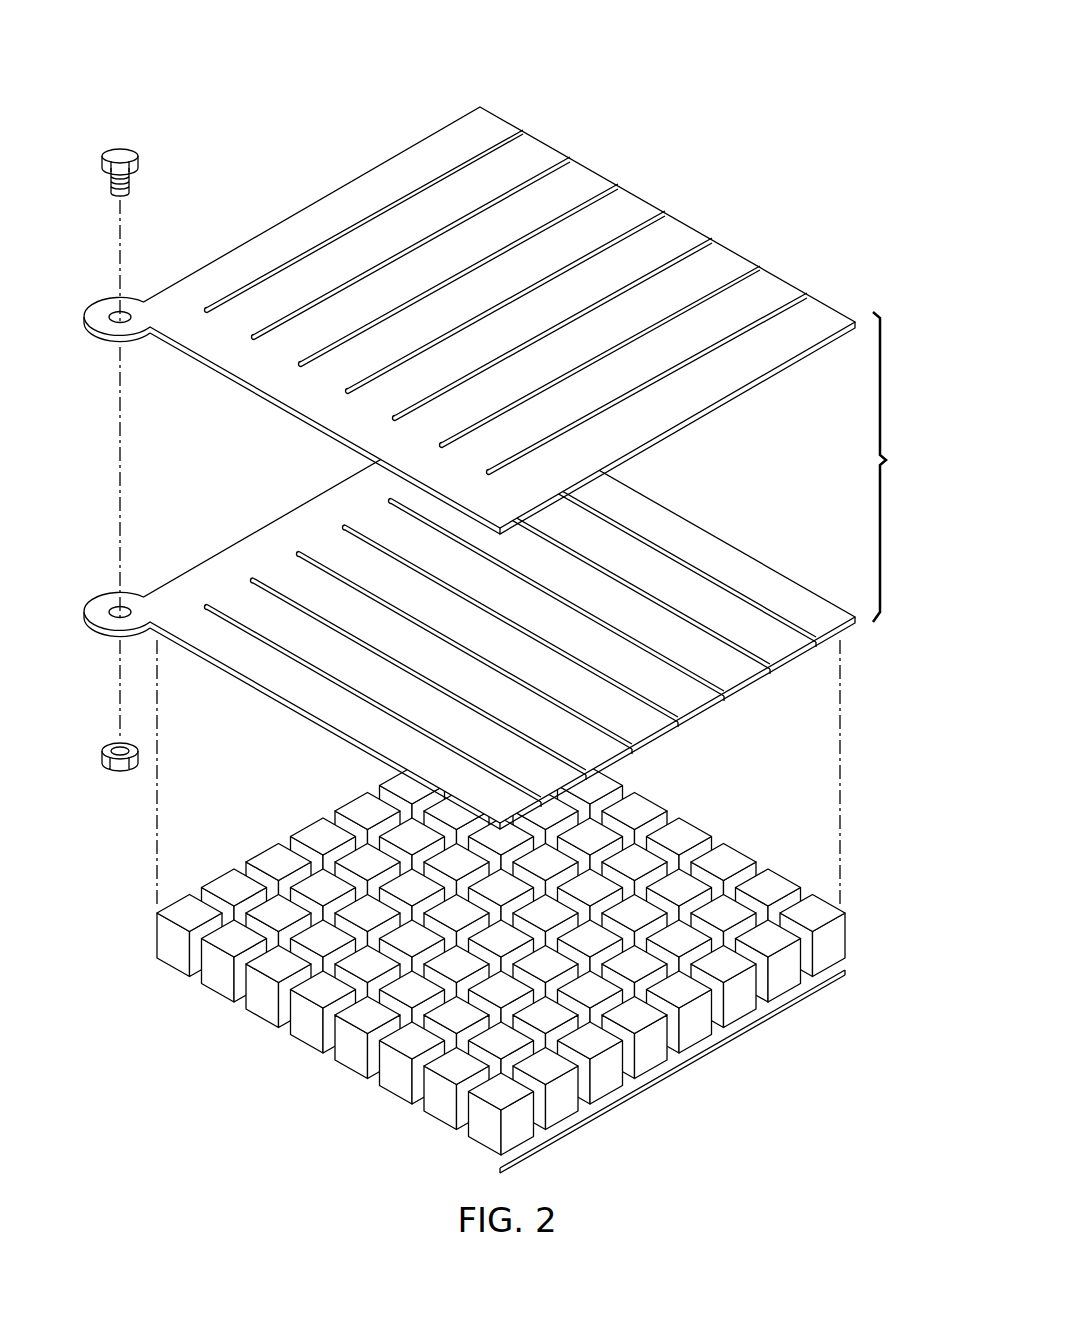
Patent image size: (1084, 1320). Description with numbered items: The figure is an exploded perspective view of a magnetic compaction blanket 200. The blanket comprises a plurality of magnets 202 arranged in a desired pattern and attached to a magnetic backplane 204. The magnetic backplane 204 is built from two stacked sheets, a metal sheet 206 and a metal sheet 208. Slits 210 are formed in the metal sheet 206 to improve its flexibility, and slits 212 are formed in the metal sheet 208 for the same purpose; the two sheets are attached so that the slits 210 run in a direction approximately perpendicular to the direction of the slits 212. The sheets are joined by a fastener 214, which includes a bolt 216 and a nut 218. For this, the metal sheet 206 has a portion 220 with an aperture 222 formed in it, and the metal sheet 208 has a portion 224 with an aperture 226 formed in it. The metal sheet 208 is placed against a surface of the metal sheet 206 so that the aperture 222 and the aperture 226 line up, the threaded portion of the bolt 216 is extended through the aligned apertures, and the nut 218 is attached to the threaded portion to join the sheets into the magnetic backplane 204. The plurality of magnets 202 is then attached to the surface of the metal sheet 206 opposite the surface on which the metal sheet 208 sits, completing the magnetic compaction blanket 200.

The magnetic compaction blanket 200 is at (499, 590).
The plurality of magnets 202 is at (673, 1073).
The magnetic backplane 204 is at (906, 467).
The metal sheet 206 is at (458, 615).
The metal sheet 208 is at (457, 306).
The slits 210 is at (680, 617).
The slits 212 is at (470, 153).
The fastener 214 is at (126, 453).
The bolt 216 is at (118, 151).
The nut 218 is at (116, 768).
The portion 220 is at (126, 581).
The aperture 222 is at (130, 600).
The portion 224 is at (124, 286).
The aperture 226 is at (135, 303).